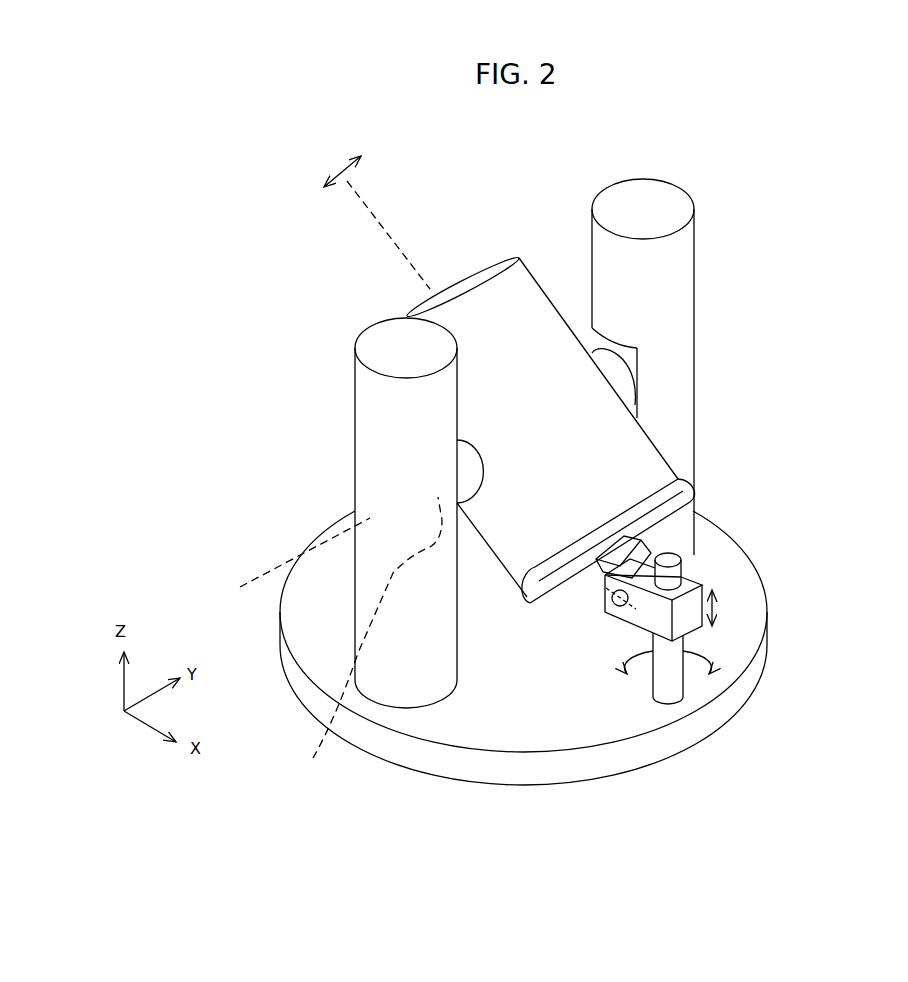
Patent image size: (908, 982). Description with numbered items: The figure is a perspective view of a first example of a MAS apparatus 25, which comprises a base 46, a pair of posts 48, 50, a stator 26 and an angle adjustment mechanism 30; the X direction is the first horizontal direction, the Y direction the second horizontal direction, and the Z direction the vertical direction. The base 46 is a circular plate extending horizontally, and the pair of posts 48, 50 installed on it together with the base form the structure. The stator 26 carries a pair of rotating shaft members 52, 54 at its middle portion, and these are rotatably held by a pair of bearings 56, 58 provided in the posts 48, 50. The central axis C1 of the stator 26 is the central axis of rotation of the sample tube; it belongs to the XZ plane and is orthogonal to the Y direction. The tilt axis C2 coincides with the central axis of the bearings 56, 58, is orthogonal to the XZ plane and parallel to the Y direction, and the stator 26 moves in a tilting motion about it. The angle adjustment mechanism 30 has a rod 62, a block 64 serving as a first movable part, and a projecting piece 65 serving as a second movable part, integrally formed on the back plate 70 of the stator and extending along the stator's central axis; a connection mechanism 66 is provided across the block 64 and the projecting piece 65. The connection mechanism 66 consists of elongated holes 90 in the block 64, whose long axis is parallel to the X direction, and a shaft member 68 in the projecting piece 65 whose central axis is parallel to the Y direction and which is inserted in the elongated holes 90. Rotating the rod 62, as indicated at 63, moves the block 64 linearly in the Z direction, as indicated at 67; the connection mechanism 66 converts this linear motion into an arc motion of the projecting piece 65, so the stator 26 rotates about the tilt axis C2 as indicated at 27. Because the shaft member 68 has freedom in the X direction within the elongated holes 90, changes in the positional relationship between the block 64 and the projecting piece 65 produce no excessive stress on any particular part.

The conveying unit 25 is at (675, 150).
The stator 26 is at (497, 240).
The rotational motion of the stator 27 is at (340, 162).
The angle adjustment mechanism 30 is at (714, 559).
The base 46 is at (487, 735).
The post 48 is at (358, 408).
The post 50 is at (694, 271).
The rotating shaft member 52 is at (465, 463).
The rotating shaft member 54 is at (610, 362).
The bearing 56 is at (373, 640).
The bearing 58 is at (637, 348).
The rod 62 is at (665, 690).
The rotation of the rod 63 is at (712, 653).
The block 64 is at (703, 582).
The projecting piece 65 is at (690, 542).
The connection mechanism 66 is at (593, 612).
The linear motion of the block 67 is at (720, 607).
The shaft member 68 is at (603, 594).
The back plate 70 is at (693, 478).
The elongated holes 90 is at (645, 598).
The central axis of the stator C1 is at (368, 210).
The tilt axis of the stator C2 is at (265, 573).